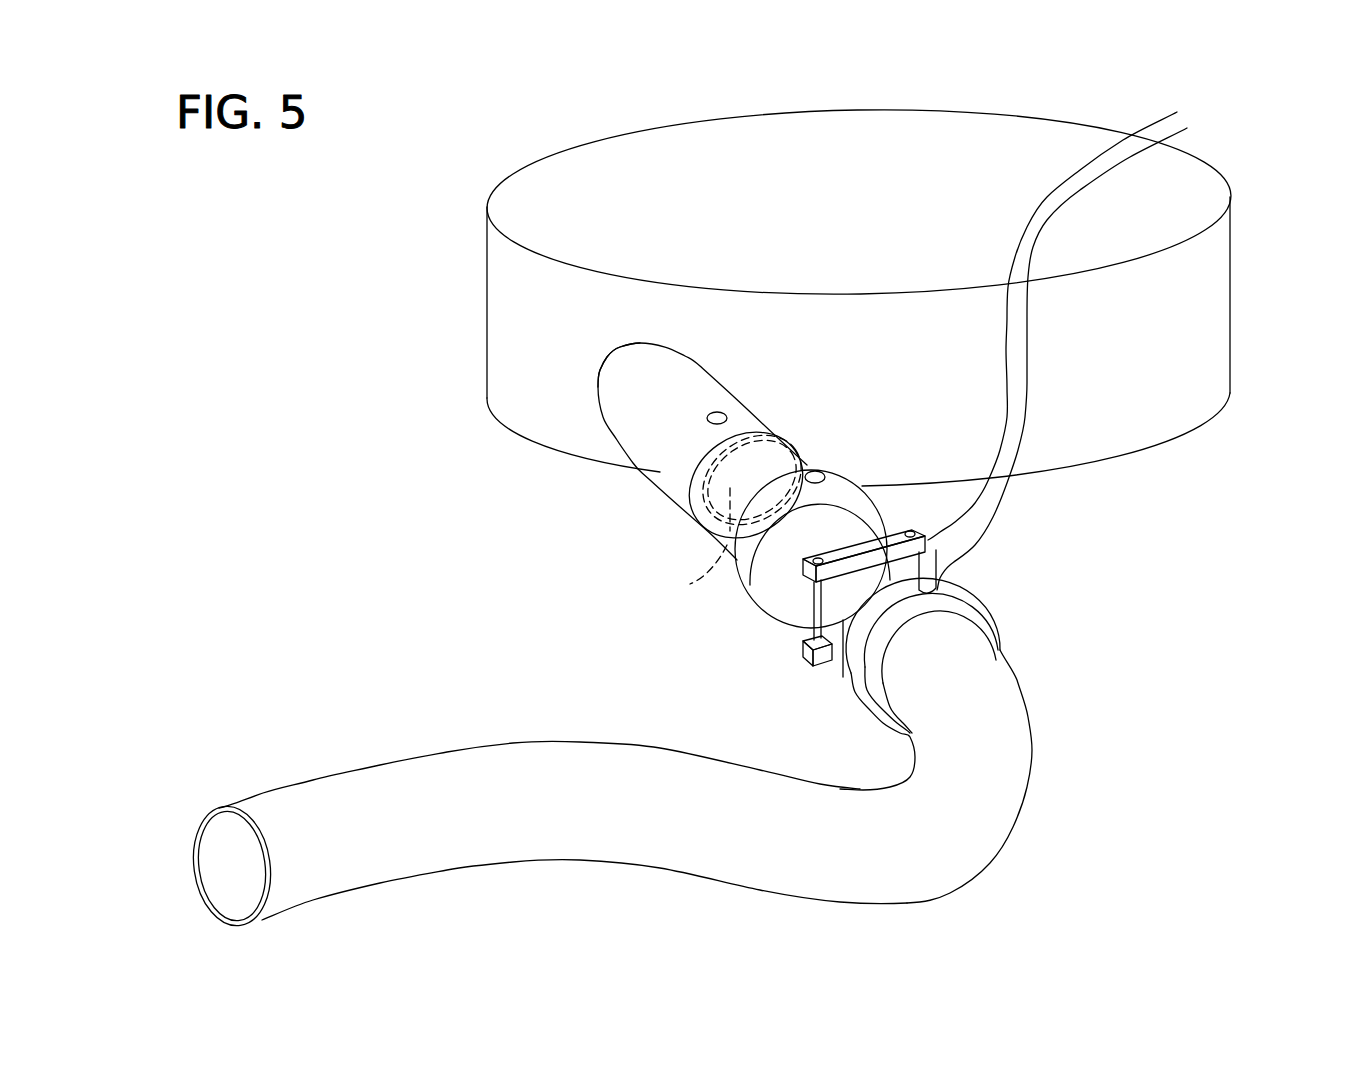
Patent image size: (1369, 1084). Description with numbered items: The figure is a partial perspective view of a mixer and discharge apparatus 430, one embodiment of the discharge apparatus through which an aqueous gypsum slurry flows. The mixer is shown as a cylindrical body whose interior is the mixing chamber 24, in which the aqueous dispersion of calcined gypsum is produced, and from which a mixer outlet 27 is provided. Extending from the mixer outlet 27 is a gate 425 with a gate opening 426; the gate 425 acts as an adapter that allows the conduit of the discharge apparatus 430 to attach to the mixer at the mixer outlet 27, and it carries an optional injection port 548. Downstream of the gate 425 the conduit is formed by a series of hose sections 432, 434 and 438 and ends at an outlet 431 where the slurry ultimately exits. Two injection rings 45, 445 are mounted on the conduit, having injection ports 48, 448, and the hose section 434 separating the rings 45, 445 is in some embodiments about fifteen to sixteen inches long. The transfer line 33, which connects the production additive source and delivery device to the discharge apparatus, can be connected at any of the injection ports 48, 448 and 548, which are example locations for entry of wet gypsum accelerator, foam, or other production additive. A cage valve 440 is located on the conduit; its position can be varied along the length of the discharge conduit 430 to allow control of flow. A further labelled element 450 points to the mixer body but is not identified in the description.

The mixing chamber 24 is at (797, 201).
The mixer outlet 27 is at (607, 353).
The transfer line 33 is at (1017, 360).
The injection ring 45 is at (963, 590).
The injection port 48 is at (931, 538).
The gate 425 is at (665, 457).
The gate opening 426 is at (725, 545).
The discharge apparatus 430 is at (228, 706).
The outlet 431 is at (222, 876).
The hose section 432 is at (809, 464).
The hose section 434 is at (846, 660).
The hose section 438 is at (474, 835).
The cage valve 440 is at (811, 630).
The injection ring 445 is at (749, 578).
The injection port 448 is at (826, 472).
The tank wall 450 is at (520, 332).
The injection port 548 is at (717, 413).